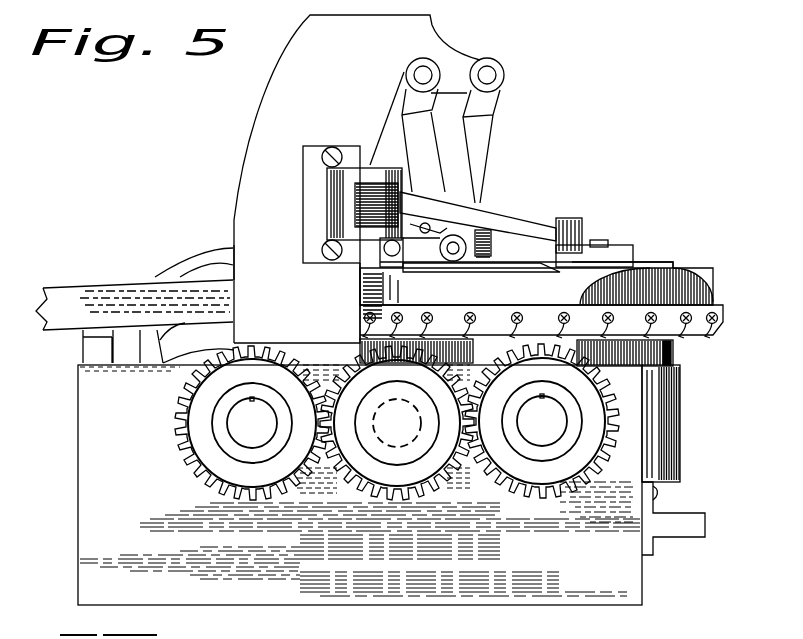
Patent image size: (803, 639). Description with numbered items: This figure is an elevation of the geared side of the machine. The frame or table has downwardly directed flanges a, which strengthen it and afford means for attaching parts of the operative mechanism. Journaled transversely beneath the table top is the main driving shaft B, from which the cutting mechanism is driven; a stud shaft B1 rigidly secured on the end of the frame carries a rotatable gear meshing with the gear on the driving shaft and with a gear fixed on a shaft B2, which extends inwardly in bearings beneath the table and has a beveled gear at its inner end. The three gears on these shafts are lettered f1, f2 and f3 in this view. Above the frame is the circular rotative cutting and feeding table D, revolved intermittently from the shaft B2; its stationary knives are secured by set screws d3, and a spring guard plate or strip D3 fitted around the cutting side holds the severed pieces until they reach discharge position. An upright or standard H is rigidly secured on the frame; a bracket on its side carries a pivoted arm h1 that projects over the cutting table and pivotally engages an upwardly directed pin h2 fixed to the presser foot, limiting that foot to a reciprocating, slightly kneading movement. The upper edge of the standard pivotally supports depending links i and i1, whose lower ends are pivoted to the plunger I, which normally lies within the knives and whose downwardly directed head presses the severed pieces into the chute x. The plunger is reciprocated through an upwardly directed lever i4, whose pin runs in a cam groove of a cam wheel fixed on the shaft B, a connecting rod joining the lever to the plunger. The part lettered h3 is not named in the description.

The standard H is at (280, 113).
The chute x is at (82, 293).
The flange a is at (95, 503).
The main driving shaft B is at (247, 410).
The stud shaft B1 is at (403, 433).
The shaft B2 is at (547, 430).
The first gear f1 is at (205, 418).
The second gear f2 is at (435, 460).
The third gear f3 is at (620, 425).
The cutting and feeding table D is at (718, 322).
The spring guard plate D3 is at (573, 290).
The set screw d3 is at (688, 322).
The plunger I is at (430, 247).
The link i is at (473, 147).
The link i1 is at (407, 150).
The lever i4 is at (457, 67).
The arm h1 is at (515, 227).
The pin h2 is at (573, 230).
The bar h3 is at (610, 247).